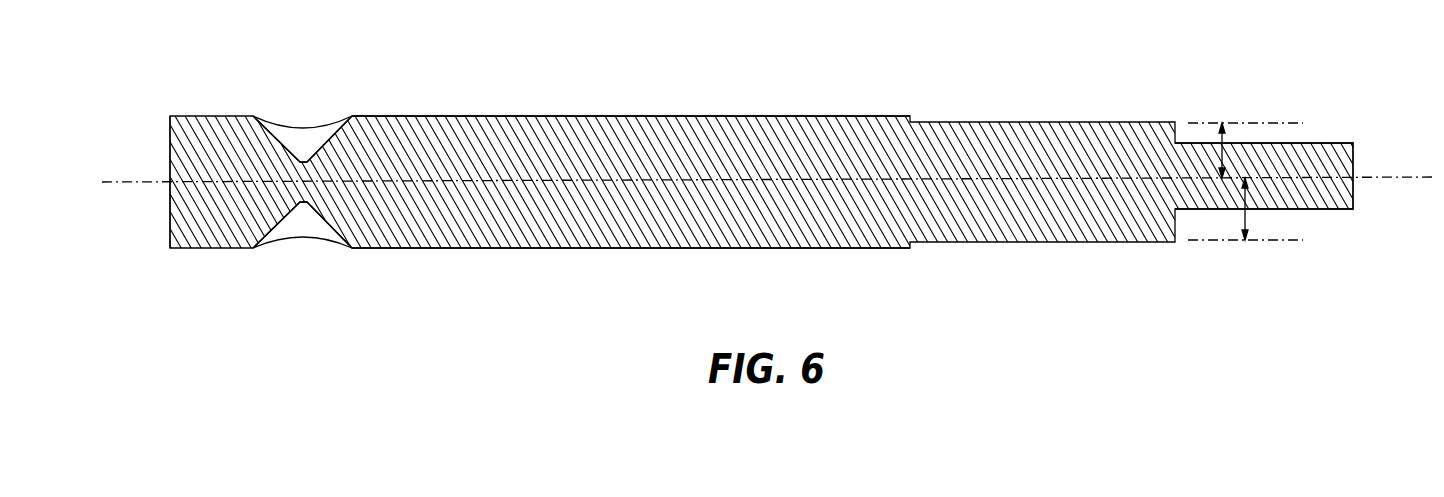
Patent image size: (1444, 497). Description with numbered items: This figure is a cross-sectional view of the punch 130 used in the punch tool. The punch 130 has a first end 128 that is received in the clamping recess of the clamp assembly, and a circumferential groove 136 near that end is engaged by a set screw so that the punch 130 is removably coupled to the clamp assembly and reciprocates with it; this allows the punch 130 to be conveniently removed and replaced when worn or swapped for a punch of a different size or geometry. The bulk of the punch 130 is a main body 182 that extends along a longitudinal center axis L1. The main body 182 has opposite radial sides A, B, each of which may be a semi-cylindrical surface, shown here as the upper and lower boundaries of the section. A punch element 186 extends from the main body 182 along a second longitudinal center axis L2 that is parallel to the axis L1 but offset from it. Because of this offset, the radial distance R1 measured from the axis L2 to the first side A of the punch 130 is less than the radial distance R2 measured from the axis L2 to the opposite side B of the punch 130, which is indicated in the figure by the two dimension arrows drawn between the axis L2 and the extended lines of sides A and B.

The first end 128 is at (170, 140).
The punch 130 is at (817, 270).
The circumferential groove 136 is at (310, 137).
The main body 182 is at (650, 230).
The punch element 186 is at (1353, 157).
The first radial side A is at (492, 115).
The opposite radial side B is at (492, 250).
The longitudinal center axis L1 is at (960, 182).
The second longitudinal center axis L2 is at (1388, 175).
The radial distance R1 is at (1225, 152).
The radial distance R2 is at (1247, 215).